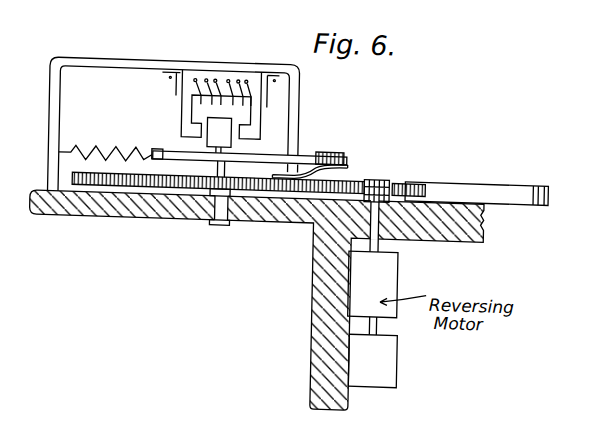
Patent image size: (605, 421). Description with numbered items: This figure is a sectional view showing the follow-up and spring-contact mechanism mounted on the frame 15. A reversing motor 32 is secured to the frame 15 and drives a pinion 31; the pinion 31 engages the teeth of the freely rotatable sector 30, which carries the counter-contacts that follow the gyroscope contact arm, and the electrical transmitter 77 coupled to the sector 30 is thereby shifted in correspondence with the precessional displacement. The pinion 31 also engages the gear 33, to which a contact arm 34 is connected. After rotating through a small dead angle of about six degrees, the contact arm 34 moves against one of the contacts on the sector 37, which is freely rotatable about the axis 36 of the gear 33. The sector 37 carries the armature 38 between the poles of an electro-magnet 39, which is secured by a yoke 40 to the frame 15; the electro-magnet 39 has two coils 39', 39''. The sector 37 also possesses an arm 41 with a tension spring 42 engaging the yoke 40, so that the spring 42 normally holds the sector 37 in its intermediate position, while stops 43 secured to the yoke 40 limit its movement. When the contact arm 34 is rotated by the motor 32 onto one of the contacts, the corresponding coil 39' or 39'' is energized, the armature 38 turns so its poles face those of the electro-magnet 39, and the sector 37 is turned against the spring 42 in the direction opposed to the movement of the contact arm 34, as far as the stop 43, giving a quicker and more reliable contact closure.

The frame 15 is at (325, 281).
The freely rotatable sector 30 is at (477, 174).
The pinion 31 is at (378, 169).
The reversing motor 32 is at (376, 264).
The gear 33 is at (123, 183).
The contact arm 34 is at (342, 160).
The axis 36 is at (211, 162).
The sector 37 is at (262, 151).
The armature 38 is at (218, 114).
The electro-magnet 39 is at (192, 103).
The coil 39' is at (207, 64).
The coil 39'' is at (250, 70).
The yoke 40 is at (96, 56).
The arm 41 is at (152, 149).
The tension spring 42 is at (79, 143).
The stops 43 is at (292, 94).
The electrical transmitter 77 is at (386, 356).